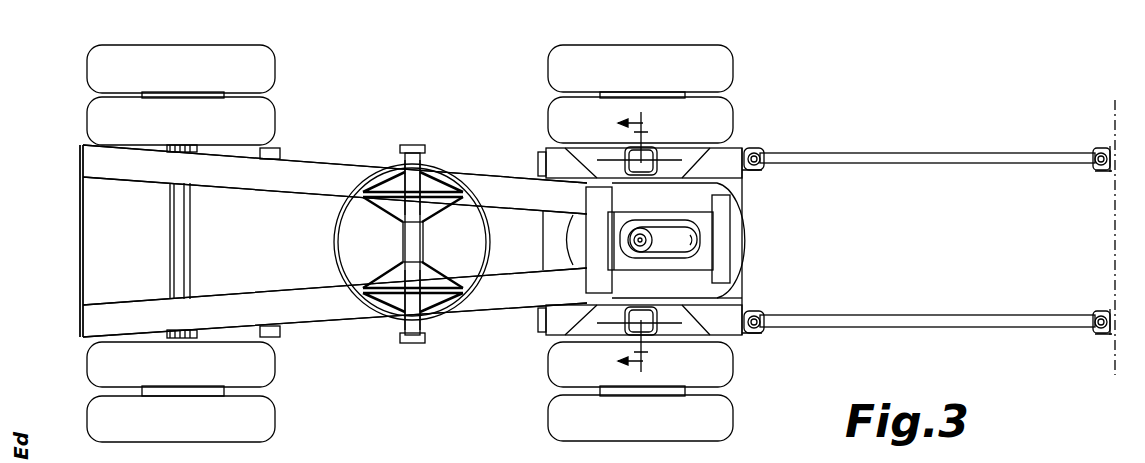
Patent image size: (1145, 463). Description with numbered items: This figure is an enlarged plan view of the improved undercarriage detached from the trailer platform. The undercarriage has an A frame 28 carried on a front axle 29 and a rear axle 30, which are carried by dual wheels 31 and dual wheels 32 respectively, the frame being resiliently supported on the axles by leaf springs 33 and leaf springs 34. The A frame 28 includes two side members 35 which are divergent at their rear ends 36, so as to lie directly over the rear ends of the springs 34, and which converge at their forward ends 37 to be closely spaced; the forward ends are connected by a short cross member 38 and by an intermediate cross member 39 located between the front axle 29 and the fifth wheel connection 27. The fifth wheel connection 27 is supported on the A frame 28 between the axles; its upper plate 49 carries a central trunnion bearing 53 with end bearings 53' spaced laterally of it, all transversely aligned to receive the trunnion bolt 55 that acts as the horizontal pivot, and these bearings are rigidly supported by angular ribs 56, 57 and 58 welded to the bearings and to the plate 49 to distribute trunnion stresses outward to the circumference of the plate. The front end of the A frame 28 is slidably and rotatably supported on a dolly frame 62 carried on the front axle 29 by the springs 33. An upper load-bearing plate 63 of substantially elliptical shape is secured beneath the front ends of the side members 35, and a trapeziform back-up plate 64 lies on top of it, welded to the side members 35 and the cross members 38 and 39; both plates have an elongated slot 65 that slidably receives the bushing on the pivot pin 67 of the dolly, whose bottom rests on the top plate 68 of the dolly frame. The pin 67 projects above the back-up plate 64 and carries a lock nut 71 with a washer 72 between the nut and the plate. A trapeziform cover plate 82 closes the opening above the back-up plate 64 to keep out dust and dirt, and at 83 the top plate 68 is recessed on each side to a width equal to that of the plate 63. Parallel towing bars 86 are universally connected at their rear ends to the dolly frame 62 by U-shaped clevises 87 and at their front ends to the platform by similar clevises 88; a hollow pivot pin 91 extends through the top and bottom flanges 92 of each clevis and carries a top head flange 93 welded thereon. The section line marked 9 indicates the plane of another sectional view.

The section line 9 is at (625, 242).
The fifth wheel connection 27 is at (302, 238).
The A frame 28 is at (486, 320).
The front axle 29 is at (650, 152).
The rear axle 30 is at (170, 241).
The dual wheels 31 is at (560, 60).
The dual wheels 32 is at (268, 60).
The leaf springs 33 is at (690, 165).
The leaf springs 34 is at (270, 148).
The side members 35 is at (490, 190).
The rear ends 36 is at (86, 163).
The forward ends 37 is at (744, 182).
The short cross member 38 is at (731, 237).
The intermediate cross member 39 is at (586, 284).
The upper plate 49 is at (412, 242).
The central trunnion bearing 53 is at (437, 244).
The end bearings 53' is at (441, 244).
The trunnion bolt 55 is at (411, 150).
The angular ribs 56 is at (368, 186).
The angular ribs 57 is at (372, 198).
The angular ribs 58 is at (388, 212).
The dolly frame 62 is at (742, 340).
The upper load-bearing plate 63 is at (738, 262).
The back-up plate 64 is at (658, 256).
The elongated slot 65 is at (684, 252).
The pivot pin 67 is at (645, 236).
The top plate 68 is at (548, 158).
The lock nut 71 is at (663, 239).
The washer 72 is at (637, 230).
The cover plate 82 is at (702, 226).
The recess 83 is at (592, 170).
The parallel towing bars 86 is at (942, 152).
The clevises 87 is at (760, 152).
The clevises 88 is at (1110, 172).
The hollow pivot pin 91 is at (766, 160).
The flanges 92 is at (752, 152).
The top head flange 93 is at (760, 170).